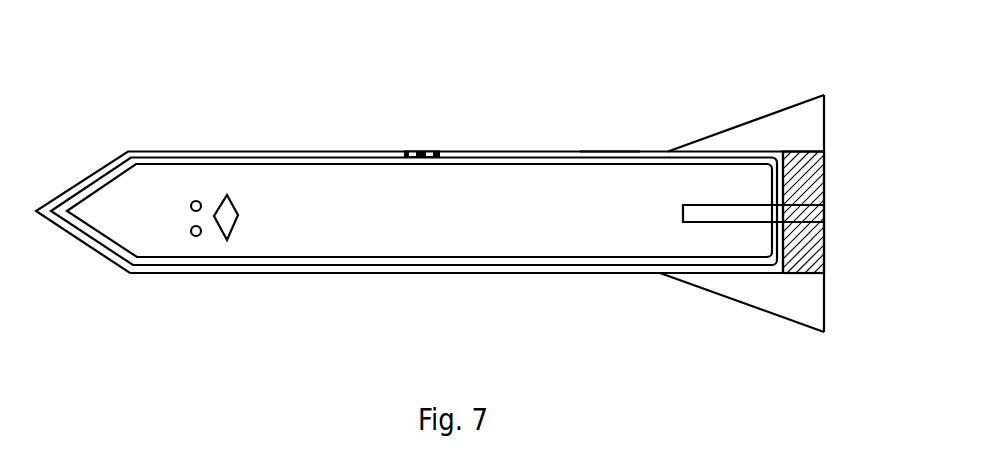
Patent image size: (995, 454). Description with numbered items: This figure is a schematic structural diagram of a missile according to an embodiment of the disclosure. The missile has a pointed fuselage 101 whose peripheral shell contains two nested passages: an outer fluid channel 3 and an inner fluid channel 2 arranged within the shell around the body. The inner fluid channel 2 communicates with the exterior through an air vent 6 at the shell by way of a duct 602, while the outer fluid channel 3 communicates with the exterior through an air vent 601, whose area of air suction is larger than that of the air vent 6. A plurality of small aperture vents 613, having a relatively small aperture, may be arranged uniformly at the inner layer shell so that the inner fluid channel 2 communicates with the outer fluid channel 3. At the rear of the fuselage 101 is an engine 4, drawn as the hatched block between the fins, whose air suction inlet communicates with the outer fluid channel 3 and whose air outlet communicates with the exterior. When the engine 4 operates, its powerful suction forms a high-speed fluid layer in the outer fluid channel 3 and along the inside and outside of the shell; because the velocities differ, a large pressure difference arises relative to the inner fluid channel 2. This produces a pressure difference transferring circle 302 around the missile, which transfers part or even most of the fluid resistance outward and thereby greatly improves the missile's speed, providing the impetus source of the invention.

The fuselage 101 is at (118, 149).
The pressure difference transferring circle 302 is at (481, 149).
The outer fluid channel 3 is at (414, 145).
The inner fluid channel 2 is at (419, 141).
The air vent 6 is at (234, 174).
The duct 602 is at (387, 92).
The air vent 601 is at (337, 174).
The small aperture vents 613 is at (571, 89).
The engine 4 is at (803, 213).